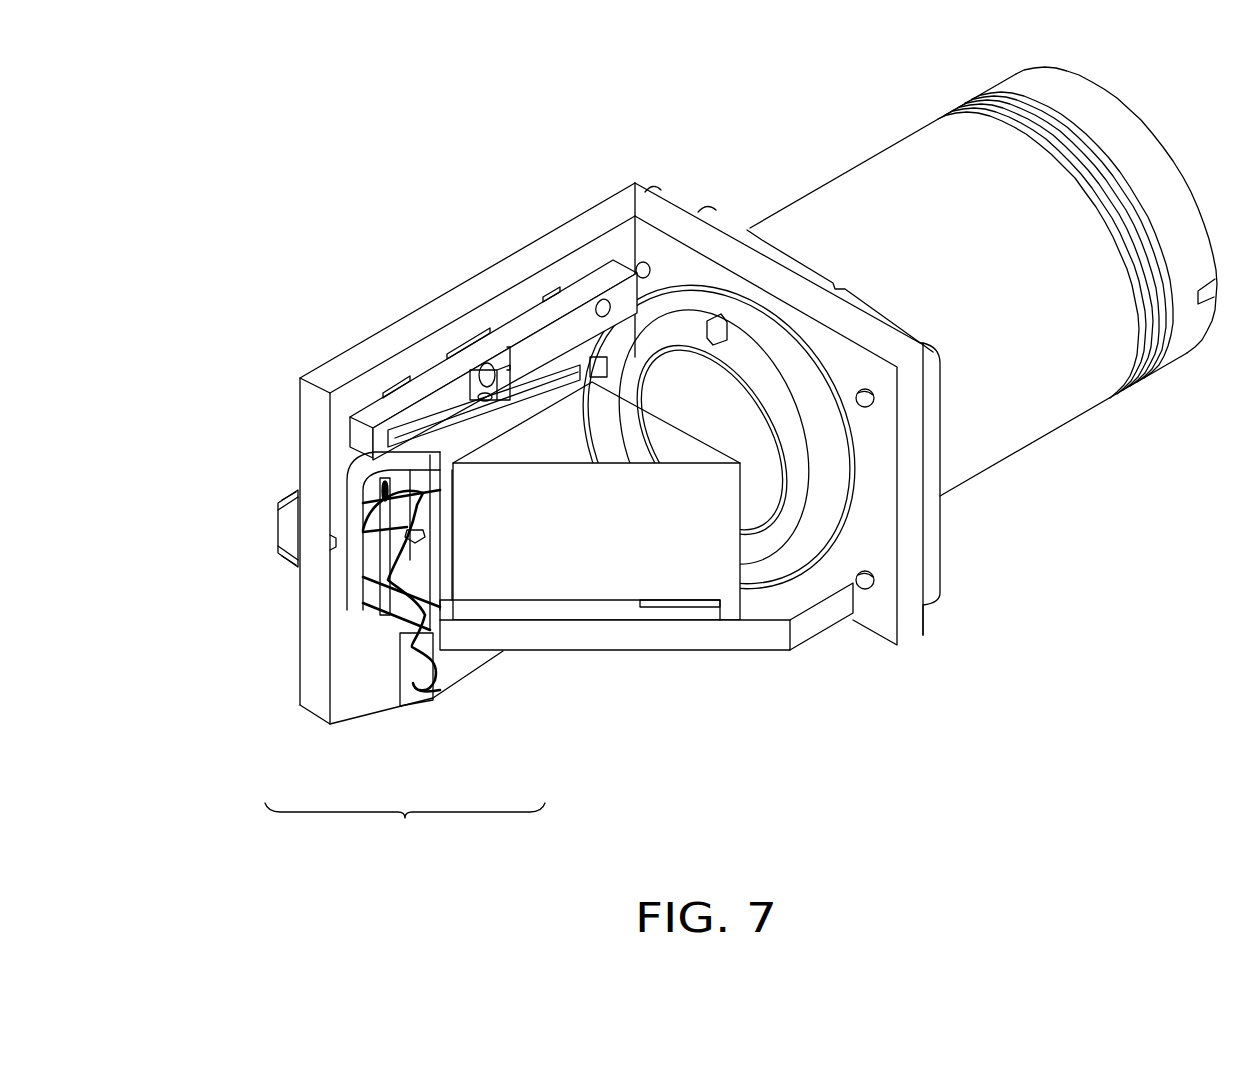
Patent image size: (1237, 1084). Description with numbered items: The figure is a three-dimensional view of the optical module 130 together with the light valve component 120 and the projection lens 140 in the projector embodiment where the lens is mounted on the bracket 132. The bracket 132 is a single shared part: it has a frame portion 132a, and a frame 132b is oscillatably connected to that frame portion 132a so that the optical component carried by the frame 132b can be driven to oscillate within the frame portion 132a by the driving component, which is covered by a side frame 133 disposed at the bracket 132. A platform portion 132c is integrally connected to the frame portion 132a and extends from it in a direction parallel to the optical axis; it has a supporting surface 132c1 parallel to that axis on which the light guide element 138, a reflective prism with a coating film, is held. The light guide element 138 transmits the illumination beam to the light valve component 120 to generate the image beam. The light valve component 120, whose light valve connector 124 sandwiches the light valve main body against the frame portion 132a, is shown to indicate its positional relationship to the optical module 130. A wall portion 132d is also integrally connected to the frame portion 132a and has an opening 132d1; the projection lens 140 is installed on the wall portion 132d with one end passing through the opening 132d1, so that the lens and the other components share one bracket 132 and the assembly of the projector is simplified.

The light valve component 120 is at (274, 599).
The light valve connector 124 is at (288, 537).
The optical module 130 is at (848, 678).
The bracket 132 is at (405, 828).
The frame portion 132a is at (313, 703).
The frame 132b is at (383, 680).
The platform portion 132c is at (483, 680).
The supporting surface 132c1 is at (697, 605).
The wall portion 132d is at (868, 620).
The opening 132d1 is at (853, 428).
The side frame 133 is at (355, 494).
The light guide element 138 is at (573, 433).
The projection lens 140 is at (828, 160).